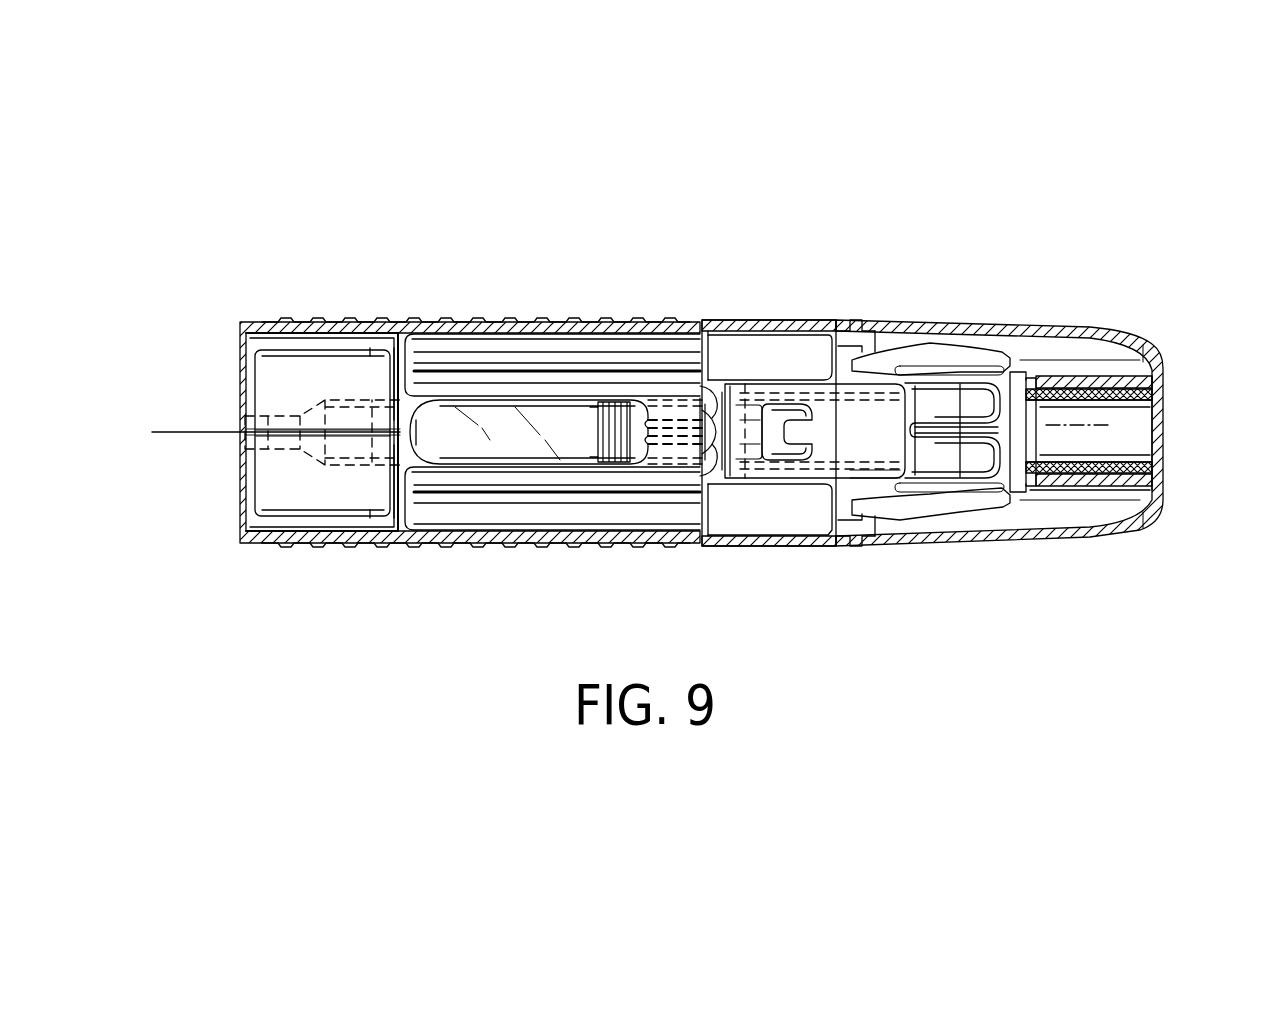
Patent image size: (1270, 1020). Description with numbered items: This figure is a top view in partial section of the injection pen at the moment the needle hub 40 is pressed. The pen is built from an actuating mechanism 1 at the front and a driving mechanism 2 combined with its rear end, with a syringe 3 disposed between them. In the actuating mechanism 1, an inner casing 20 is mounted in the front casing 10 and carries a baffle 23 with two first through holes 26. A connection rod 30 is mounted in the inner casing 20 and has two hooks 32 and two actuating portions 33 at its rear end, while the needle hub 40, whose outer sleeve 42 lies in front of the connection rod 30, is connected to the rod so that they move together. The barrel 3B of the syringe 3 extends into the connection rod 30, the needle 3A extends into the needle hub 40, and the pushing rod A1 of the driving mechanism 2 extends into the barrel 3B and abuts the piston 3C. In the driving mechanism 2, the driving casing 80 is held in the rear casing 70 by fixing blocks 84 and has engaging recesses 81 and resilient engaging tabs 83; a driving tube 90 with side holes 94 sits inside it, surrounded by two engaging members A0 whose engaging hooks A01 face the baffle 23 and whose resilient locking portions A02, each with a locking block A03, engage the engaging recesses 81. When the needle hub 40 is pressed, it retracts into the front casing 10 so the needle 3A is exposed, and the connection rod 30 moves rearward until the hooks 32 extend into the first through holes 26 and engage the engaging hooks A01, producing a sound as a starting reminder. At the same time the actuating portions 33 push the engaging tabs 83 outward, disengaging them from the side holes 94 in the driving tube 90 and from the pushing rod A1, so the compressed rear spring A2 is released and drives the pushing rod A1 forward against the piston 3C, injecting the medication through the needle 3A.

The actuating mechanism 1 is at (568, 285).
The driving mechanism 2 is at (1033, 300).
The syringe 3 is at (348, 472).
The needle 3A is at (236, 385).
The barrel 3B is at (372, 465).
The piston 3C is at (585, 420).
The front casing 10 is at (395, 312).
The inner casing 20 is at (537, 328).
The baffle 23 is at (706, 436).
The first through holes 26 is at (700, 472).
The connection rod 30 is at (487, 385).
The hooks 32 is at (743, 460).
The actuating portions 33 is at (962, 333).
The needle hub 40 is at (308, 330).
The outer sleeve 42 is at (302, 492).
The rear casing 70 is at (1028, 540).
The driving casing 80 is at (870, 328).
The engaging recesses 81 is at (776, 400).
The resilient engaging tabs 83 is at (978, 345).
The fixing blocks 84 is at (824, 400).
The driving tube 90 is at (1056, 386).
The side holes 94 is at (1042, 374).
The engaging members A0 is at (770, 464).
The engaging hooks A01 is at (716, 405).
The resilient locking portions A02 is at (893, 462).
The locking block A03 is at (848, 466).
The pushing rod A1 is at (665, 405).
The rear spring A2 is at (1108, 393).